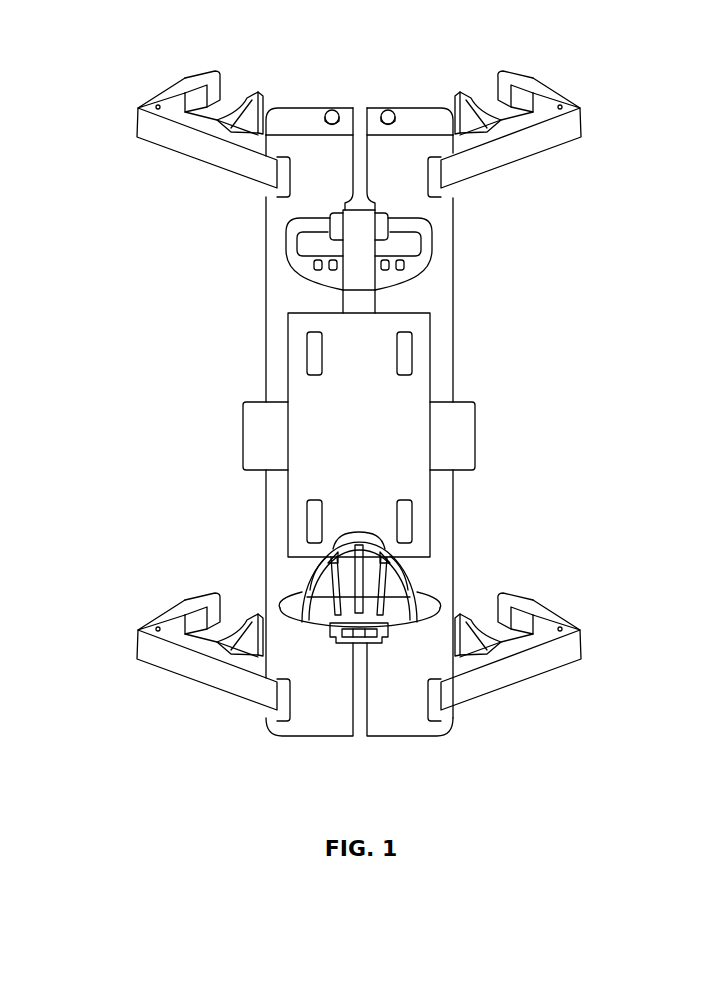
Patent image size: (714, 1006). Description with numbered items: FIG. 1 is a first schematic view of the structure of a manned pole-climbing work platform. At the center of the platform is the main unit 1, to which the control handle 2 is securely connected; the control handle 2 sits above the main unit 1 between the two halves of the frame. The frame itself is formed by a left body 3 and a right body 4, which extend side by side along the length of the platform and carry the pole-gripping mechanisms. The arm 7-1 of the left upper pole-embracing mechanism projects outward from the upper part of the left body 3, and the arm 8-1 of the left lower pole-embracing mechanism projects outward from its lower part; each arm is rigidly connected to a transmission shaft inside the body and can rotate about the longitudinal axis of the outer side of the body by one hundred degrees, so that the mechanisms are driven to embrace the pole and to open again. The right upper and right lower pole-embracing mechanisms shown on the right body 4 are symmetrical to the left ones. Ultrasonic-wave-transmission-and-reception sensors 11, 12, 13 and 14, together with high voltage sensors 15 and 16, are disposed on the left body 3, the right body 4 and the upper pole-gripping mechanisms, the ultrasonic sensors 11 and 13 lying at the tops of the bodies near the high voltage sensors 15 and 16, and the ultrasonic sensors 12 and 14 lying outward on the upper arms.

The main unit 1 is at (388, 450).
The control handle 2 is at (312, 265).
The left body 3 is at (320, 737).
The right body 4 is at (398, 737).
The arm of the left upper pole-embracing mechanism 7-1 is at (277, 178).
The arm of the left lower pole-embracing mechanism 8-1 is at (252, 645).
The ultrasonic-wave-transmission-and-reception sensor 11 is at (298, 120).
The ultrasonic-wave-transmission-and-reception sensor 12 is at (172, 115).
The ultrasonic-wave-transmission-and-reception sensor 13 is at (415, 118).
The ultrasonic-wave-transmission-and-reception sensor 14 is at (552, 115).
The high voltage sensor 15 is at (330, 110).
The high voltage sensor 16 is at (390, 110).